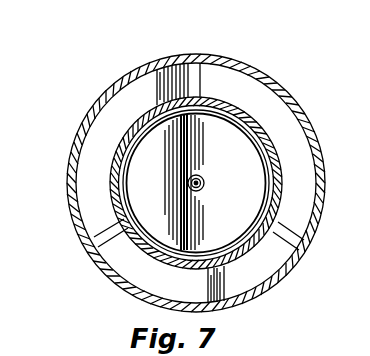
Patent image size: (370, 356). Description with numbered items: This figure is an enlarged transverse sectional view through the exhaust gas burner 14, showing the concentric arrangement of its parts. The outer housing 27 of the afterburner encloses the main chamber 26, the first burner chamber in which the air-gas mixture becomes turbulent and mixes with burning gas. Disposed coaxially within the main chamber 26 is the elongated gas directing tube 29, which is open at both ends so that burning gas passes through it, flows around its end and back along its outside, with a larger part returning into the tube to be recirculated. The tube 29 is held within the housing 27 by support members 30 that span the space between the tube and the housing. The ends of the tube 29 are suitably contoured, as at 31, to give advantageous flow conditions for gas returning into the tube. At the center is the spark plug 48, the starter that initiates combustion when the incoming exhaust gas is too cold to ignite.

The exhaust gas burner 14 is at (310, 88).
The main chamber 26 is at (241, 88).
The housing 27 is at (88, 114).
The gas directing tube 29 is at (277, 169).
The support members 30 is at (103, 232).
The contoured tube end 31 is at (171, 247).
The spark plug 48 is at (203, 180).